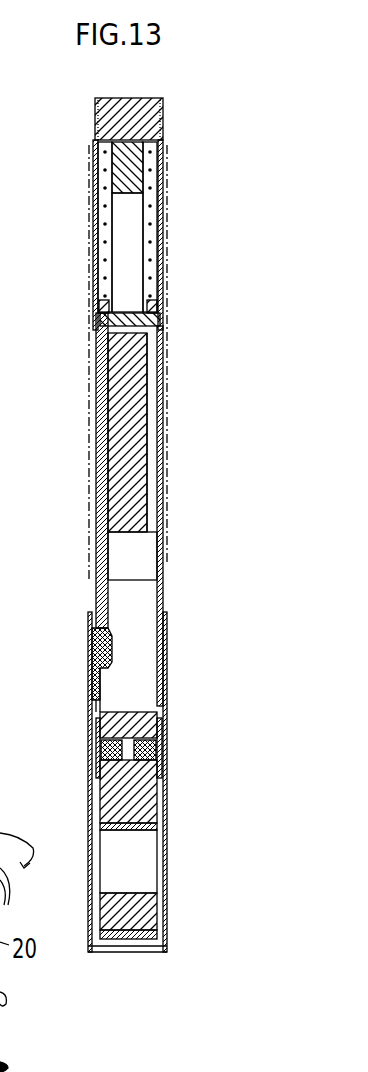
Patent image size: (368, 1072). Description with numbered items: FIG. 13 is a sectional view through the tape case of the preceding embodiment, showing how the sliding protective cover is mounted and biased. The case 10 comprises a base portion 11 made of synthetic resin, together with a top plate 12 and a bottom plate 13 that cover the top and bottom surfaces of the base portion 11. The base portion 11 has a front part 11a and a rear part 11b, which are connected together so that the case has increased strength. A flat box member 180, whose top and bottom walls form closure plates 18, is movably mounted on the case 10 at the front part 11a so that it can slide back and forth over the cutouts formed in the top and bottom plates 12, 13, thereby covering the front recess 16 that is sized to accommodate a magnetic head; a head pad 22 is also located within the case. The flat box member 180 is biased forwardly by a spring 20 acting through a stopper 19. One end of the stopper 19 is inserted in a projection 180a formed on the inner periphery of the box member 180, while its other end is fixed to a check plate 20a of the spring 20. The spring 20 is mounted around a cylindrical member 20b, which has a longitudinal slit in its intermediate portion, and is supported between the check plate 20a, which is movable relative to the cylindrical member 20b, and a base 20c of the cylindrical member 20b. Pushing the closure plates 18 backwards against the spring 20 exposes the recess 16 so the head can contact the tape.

The case 10 is at (167, 118).
The rear part 11b is at (120, 110).
The base 20c is at (160, 140).
The cylindrical member 20b is at (128, 218).
The spring 20 is at (105, 270).
The check plate 20a is at (95, 305).
The top plate 12 is at (98, 415).
The bottom plate 13 is at (163, 356).
The base portion 11 is at (130, 490).
The closure plate 18 is at (96, 725).
The stopper 19 is at (100, 560).
The projection 180a is at (92, 665).
The front part 11a is at (140, 800).
The front recess 16 is at (150, 868).
The flat box member 180 is at (167, 906).
The head pad 22 is at (128, 935).